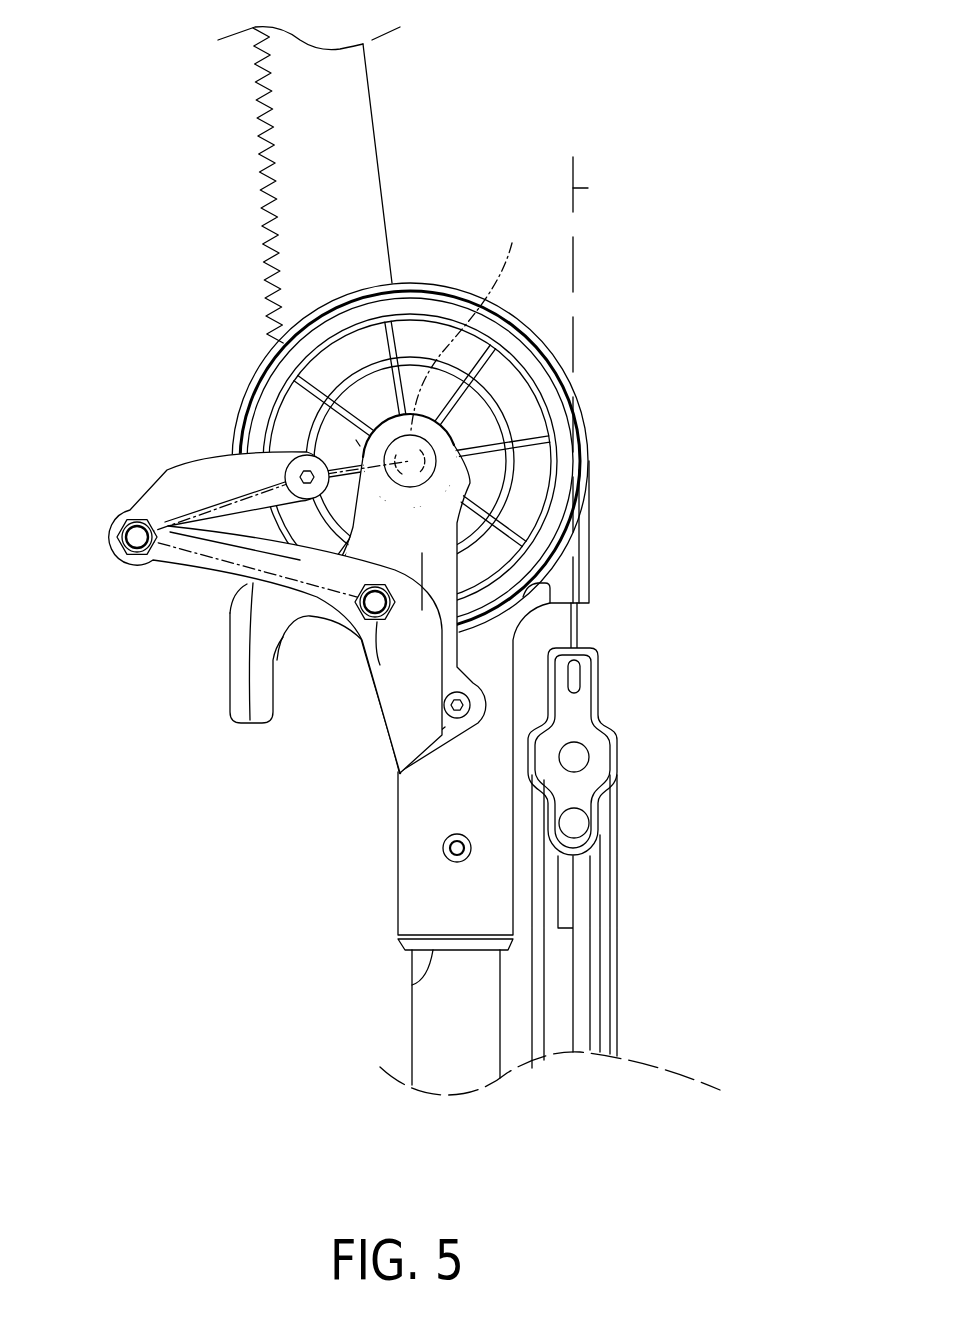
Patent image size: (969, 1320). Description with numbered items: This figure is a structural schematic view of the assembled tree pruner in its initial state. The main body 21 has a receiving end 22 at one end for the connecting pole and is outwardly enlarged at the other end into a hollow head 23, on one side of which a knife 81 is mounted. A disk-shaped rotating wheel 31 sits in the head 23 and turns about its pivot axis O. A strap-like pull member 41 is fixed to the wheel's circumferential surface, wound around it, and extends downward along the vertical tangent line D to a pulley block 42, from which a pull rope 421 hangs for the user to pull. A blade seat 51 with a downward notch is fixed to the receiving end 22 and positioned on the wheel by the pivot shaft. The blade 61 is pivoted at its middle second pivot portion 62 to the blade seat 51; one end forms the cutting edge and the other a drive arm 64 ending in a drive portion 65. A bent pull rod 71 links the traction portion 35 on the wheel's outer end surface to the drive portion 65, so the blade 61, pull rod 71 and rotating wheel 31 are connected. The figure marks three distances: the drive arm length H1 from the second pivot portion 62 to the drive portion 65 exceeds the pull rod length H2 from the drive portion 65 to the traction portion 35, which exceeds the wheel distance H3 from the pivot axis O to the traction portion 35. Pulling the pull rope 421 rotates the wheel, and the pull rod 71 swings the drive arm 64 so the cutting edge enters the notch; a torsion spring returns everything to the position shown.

The main body 21 is at (390, 905).
The receiving end 22 is at (412, 983).
The head 23 is at (420, 281).
The rotating wheel 31 is at (244, 426).
The traction portion 35 is at (290, 458).
The pull member 41 is at (578, 633).
The pulley block 42 is at (593, 812).
The pull rope 421 is at (618, 993).
The blade seat 51 is at (230, 640).
The blade 61 is at (497, 445).
The second pivot portion 62 is at (381, 650).
The drive arm 64 is at (280, 660).
The drive portion 65 is at (130, 562).
The pull rod 71 is at (165, 470).
The knife 81 is at (353, 117).
The vertical tangent line D is at (595, 183).
The pivot axis O is at (466, 317).
The linear distance of the drive arm H1 is at (233, 611).
The linear distance of the pull rod H2 is at (273, 499).
The linear distance of the rotating wheel H3 is at (353, 443).